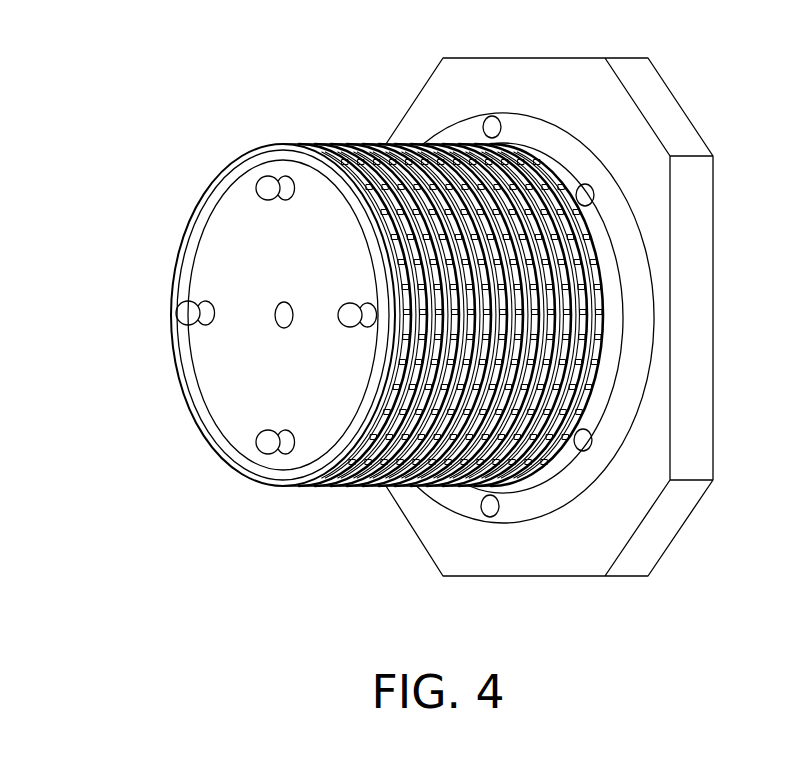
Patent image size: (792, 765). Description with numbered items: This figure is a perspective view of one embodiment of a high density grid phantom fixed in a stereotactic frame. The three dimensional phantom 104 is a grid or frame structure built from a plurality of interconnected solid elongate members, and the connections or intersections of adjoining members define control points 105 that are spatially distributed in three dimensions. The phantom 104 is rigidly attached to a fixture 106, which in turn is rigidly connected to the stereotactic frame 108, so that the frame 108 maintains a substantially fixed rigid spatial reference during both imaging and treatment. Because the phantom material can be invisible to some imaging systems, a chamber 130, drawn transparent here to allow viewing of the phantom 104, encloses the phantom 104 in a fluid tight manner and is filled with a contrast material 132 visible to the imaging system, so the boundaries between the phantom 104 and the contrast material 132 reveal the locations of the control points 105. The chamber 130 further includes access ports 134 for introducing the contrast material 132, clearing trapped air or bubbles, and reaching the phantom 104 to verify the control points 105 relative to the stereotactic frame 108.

The 3D phantom 104 is at (360, 143).
The control points 105 is at (388, 142).
The fixture 106 is at (545, 112).
The stereotactic frame 108 is at (677, 118).
The chamber 130 is at (262, 478).
The contrast material 132 is at (372, 488).
The access ports 134 is at (188, 318).